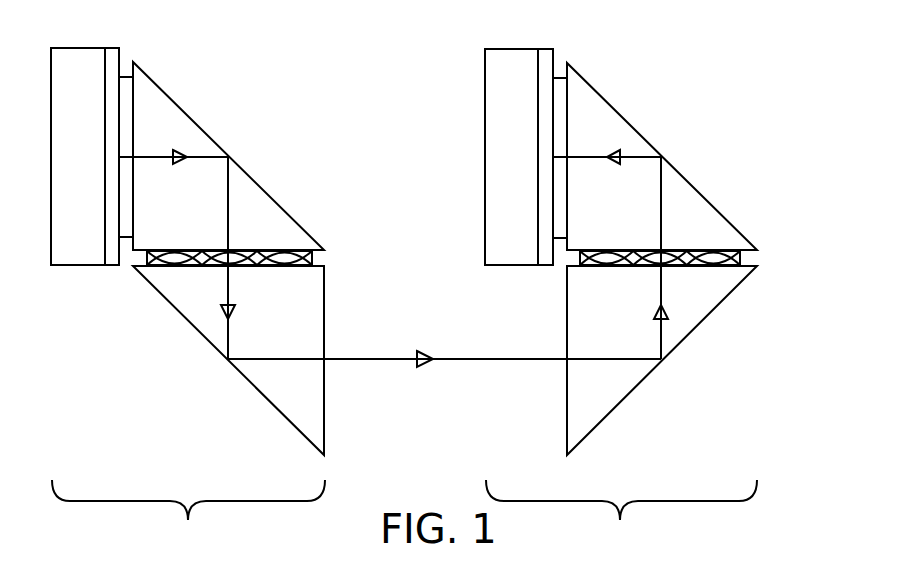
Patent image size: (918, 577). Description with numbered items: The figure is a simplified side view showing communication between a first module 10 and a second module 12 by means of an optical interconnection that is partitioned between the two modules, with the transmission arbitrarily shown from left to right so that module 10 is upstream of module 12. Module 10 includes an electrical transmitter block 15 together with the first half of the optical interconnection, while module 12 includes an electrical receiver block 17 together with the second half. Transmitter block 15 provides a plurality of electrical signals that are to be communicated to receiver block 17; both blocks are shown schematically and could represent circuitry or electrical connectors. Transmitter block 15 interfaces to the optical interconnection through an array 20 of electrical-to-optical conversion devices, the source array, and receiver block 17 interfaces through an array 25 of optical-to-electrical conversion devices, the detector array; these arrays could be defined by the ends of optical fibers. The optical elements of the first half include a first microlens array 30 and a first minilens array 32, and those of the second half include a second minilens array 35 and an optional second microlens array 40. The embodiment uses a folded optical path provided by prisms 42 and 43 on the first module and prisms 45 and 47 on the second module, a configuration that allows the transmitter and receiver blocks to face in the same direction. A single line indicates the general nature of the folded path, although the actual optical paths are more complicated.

The first module 10 is at (192, 525).
The second module 12 is at (623, 525).
The electrical transmitter block 15 is at (57, 46).
The electrical receiver block 17 is at (505, 48).
The array of electrical-to-optical conversion devices 20 is at (112, 267).
The array of optical-to-electrical conversion devices 25 is at (543, 268).
The first microlens array 30 is at (126, 75).
The second microlens array 40 is at (560, 76).
The prism 42 is at (203, 128).
The prism 47 is at (632, 128).
The first minilens array 32 is at (324, 252).
The second minilens array 35 is at (757, 252).
The prism 43 is at (330, 320).
The prism 45 is at (700, 318).